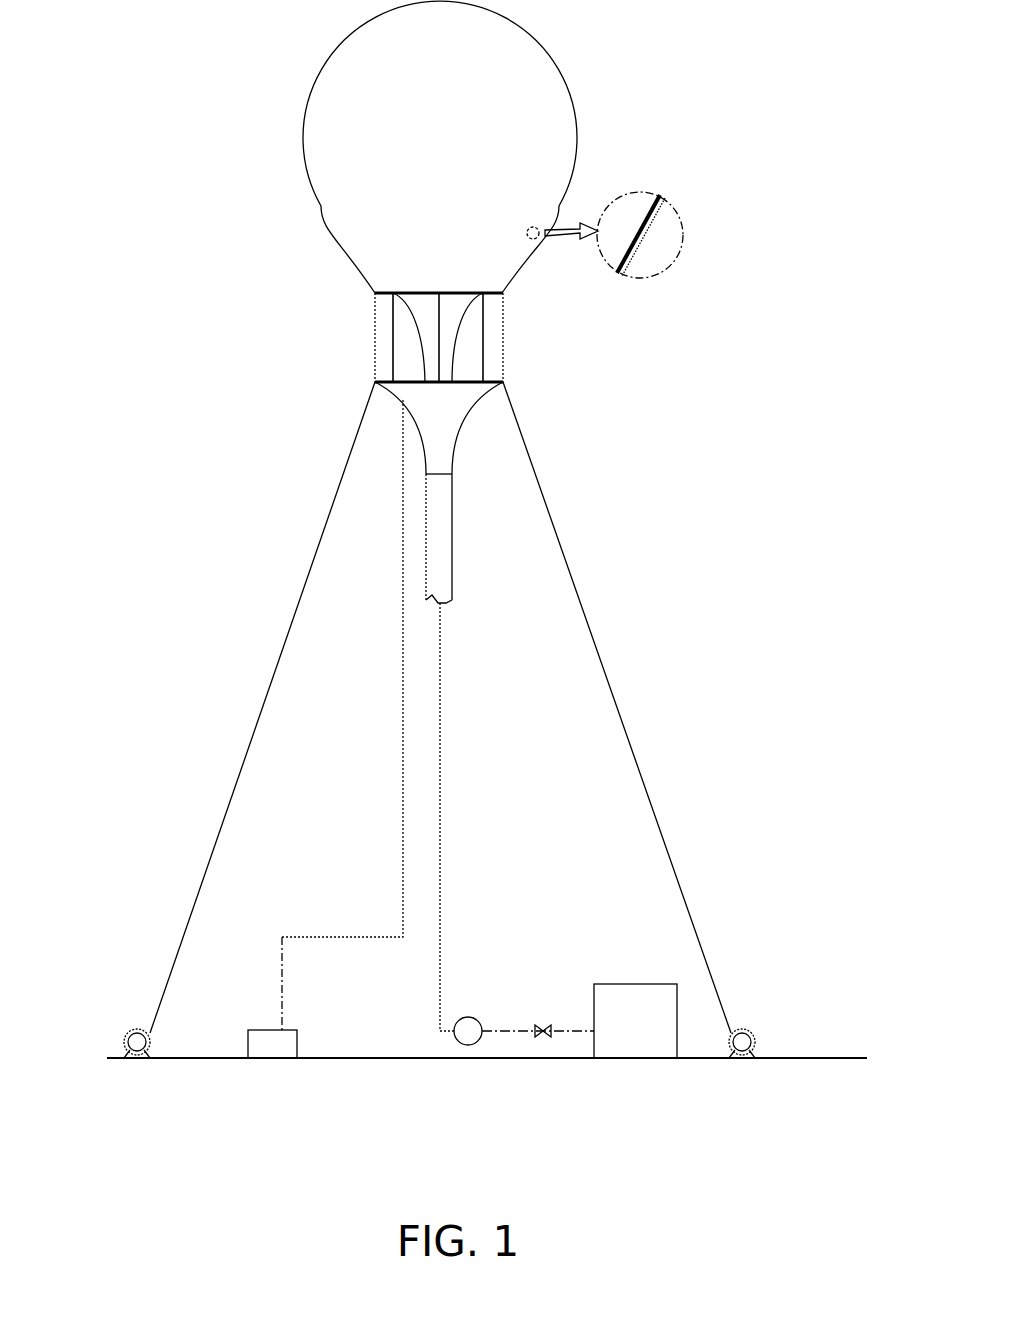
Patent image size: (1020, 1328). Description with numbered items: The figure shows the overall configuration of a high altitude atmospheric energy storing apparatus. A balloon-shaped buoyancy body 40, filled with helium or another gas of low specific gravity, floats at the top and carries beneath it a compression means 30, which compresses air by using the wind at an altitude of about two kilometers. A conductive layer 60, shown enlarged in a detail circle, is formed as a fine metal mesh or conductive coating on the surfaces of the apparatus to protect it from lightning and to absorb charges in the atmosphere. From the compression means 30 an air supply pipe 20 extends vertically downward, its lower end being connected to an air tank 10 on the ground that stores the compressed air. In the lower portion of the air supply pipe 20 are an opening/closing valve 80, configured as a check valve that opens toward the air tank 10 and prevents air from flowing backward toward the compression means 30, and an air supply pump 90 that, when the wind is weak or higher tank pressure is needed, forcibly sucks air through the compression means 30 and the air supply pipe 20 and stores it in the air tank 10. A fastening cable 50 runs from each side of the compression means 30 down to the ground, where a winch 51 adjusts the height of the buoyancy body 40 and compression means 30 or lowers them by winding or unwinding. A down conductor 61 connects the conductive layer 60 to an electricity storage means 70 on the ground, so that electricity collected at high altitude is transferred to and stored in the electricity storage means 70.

The air tank 10 is at (650, 984).
The air supply pipe 20 is at (440, 745).
The compression means 30 is at (532, 352).
The buoyancy body 40 is at (579, 131).
The fastening cable 50 is at (277, 665).
The winch 51 is at (124, 1032).
The conductive layer 60 is at (652, 226).
The down conductor 61 is at (403, 497).
The electricity storage means 70 is at (248, 1045).
The opening/closing valve 80 is at (538, 1040).
The air supply pump 90 is at (466, 1045).